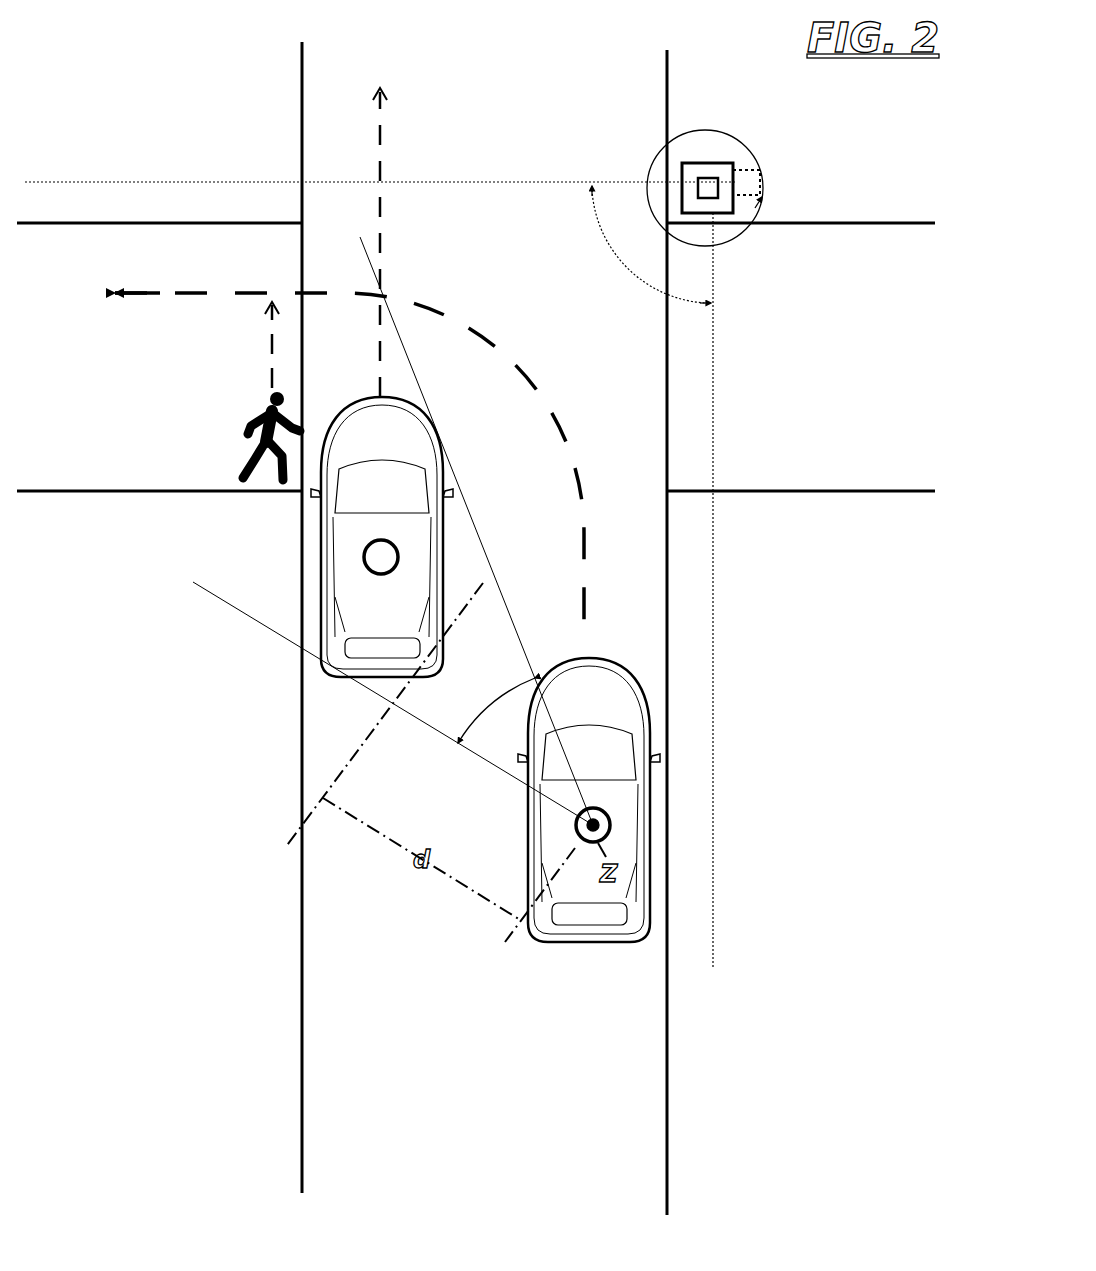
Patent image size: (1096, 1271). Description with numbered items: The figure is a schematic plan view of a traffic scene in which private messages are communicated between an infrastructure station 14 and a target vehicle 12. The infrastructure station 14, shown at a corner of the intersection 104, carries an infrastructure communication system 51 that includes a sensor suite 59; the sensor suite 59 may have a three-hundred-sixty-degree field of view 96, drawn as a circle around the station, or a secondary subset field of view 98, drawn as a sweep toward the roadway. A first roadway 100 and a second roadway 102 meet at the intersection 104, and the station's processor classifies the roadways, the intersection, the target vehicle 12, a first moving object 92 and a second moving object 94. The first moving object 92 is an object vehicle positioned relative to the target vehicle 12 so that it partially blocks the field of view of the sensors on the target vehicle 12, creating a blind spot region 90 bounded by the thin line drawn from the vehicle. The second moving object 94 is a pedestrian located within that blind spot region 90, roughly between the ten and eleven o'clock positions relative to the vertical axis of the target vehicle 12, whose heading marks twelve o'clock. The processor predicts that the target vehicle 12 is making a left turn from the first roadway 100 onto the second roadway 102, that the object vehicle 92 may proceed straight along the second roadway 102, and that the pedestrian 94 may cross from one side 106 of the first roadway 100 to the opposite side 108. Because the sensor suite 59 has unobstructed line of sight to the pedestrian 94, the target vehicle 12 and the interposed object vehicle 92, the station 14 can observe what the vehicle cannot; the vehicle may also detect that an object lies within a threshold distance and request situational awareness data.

The target vehicle 12 is at (528, 803).
The infrastructure station 14 is at (764, 170).
The infrastructure communication system 51 is at (697, 162).
The sensor suite 59 is at (697, 183).
The blind spot region 90 is at (235, 607).
The first moving object (object vehicle) 92 is at (444, 465).
The second moving object (pedestrian) 94 is at (244, 425).
The 360° field of view 96 is at (735, 240).
The secondary field of view 98 is at (645, 288).
The first roadway 100 is at (130, 222).
The second roadway 102 is at (302, 63).
The intersection 104 is at (333, 248).
The one side of roadway 106 is at (130, 493).
The opposite side of roadway 108 is at (181, 222).